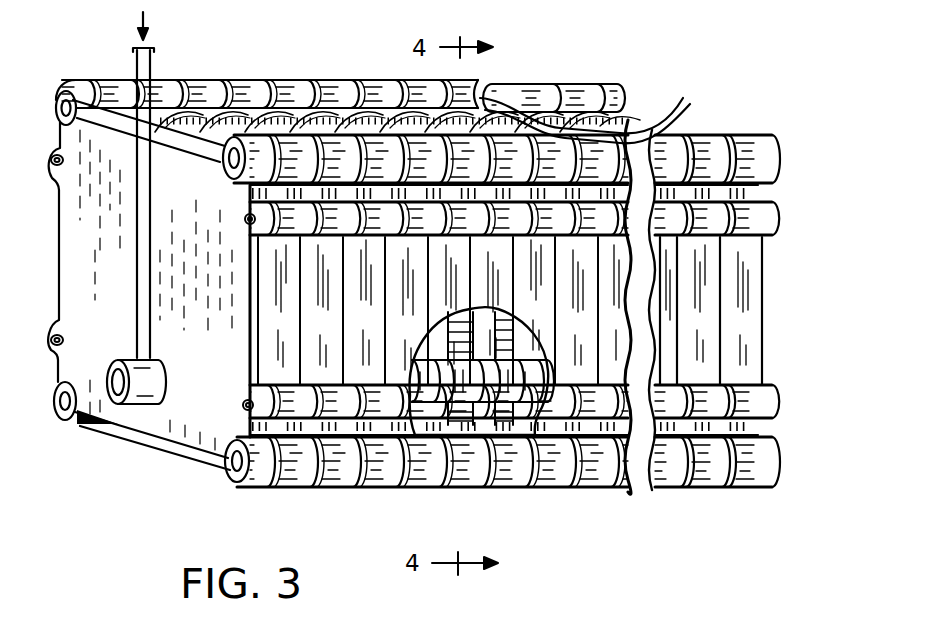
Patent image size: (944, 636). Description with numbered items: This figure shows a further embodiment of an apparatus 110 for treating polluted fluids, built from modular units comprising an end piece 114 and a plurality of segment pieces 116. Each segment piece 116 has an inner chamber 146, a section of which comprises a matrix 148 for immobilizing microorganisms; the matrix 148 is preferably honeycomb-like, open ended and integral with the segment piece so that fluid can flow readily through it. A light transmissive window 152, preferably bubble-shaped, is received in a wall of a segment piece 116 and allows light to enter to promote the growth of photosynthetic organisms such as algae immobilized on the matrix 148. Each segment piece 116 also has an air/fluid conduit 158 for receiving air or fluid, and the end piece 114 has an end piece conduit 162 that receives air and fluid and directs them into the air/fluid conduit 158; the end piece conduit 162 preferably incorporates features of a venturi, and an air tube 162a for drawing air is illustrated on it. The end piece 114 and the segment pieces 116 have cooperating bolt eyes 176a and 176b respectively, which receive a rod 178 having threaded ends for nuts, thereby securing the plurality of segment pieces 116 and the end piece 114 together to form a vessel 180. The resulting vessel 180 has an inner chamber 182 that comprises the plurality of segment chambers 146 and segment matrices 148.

The apparatus 110 is at (421, 264).
The end piece 114 is at (153, 432).
The segment piece 116 is at (300, 487).
The inner chamber 146 is at (443, 433).
The matrix 148 is at (528, 433).
The light transmissive window 152 is at (604, 111).
The air/fluid conduit 158 is at (490, 433).
The end piece conduit 162 is at (140, 404).
The air tube 162a is at (143, 276).
The bolt eyes 176a is at (243, 207).
The bolt eyes 176b is at (843, 200).
The rod 178 is at (61, 164).
The vessel 180 is at (745, 354).
The inner chamber 182 is at (430, 423).